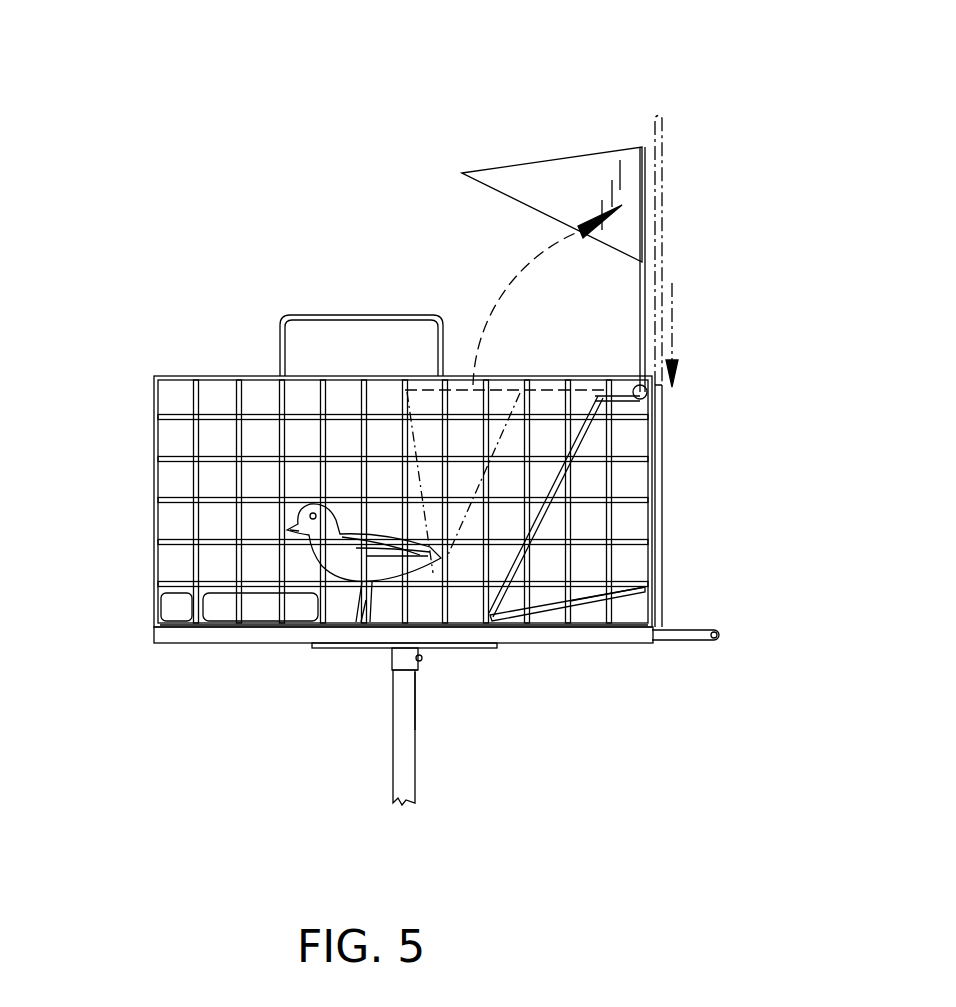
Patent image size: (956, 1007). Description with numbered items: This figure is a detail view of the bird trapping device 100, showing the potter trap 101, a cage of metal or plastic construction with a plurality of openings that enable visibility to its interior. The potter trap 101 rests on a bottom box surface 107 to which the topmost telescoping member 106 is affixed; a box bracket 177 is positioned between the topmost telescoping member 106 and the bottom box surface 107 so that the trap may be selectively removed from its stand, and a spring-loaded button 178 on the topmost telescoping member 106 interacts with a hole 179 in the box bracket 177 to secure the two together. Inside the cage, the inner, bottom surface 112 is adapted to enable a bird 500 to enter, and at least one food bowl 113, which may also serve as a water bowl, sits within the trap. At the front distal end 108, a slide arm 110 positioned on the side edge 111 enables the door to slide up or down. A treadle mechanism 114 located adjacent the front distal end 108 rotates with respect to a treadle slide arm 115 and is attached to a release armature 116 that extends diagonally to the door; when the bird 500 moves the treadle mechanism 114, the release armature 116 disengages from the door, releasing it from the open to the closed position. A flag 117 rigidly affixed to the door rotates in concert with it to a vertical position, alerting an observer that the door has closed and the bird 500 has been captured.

The bird trapping device 100 is at (138, 102).
The potter trap 101 is at (157, 452).
The topmost telescoping member 106 is at (397, 682).
The bottom box surface 107 is at (238, 645).
The front distal end 108 is at (655, 594).
The slide arm 110 is at (663, 417).
The side edge 111 is at (636, 378).
The inner, bottom surface 112 is at (413, 626).
The food bowl 113 is at (215, 603).
The treadle mechanism 114 is at (582, 598).
The treadle slide arm 115 is at (567, 607).
The release armature 116 is at (587, 440).
The flag 117 is at (565, 170).
The box bracket 177 is at (395, 660).
The spring-loaded button 178 is at (420, 658).
The hole 179 is at (420, 682).
The bird 500 is at (333, 530).